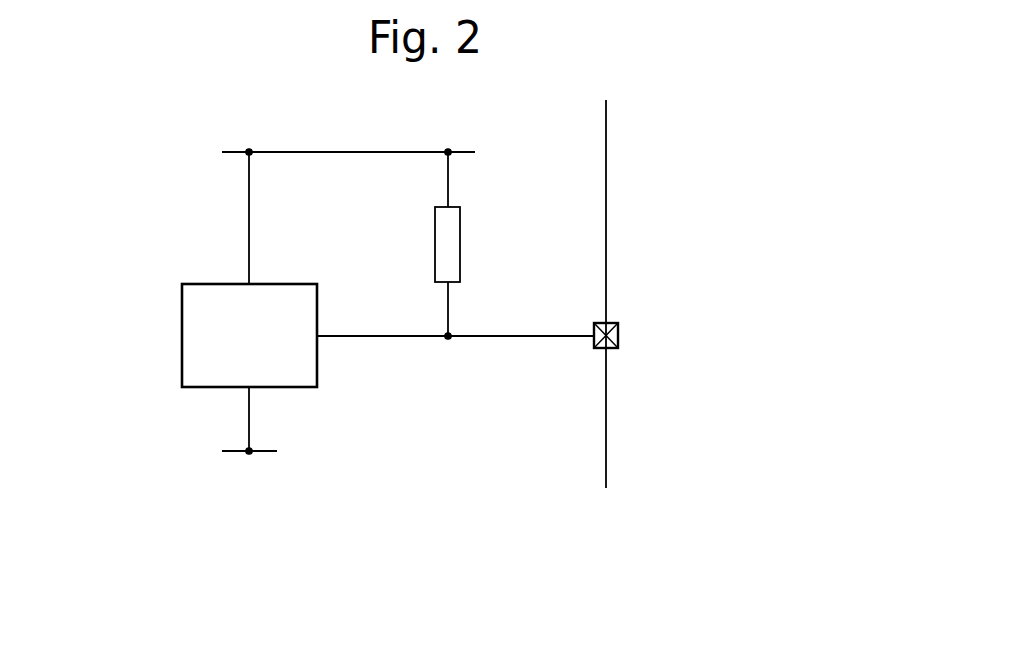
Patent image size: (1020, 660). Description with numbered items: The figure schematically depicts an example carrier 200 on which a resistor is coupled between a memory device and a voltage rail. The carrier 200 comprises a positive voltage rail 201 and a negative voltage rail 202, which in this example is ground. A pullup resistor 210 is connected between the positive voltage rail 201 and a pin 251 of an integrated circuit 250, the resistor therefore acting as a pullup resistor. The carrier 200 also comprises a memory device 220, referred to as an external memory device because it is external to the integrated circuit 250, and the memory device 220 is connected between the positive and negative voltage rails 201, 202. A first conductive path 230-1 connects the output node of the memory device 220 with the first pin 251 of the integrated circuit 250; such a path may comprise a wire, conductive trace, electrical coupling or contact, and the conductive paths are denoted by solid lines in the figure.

The carrier 200 is at (594, 564).
The positive voltage rail 201 is at (301, 152).
The negative voltage rail 202 is at (229, 482).
The pullup resistor 210 is at (435, 222).
The memory device 220 is at (182, 325).
The first conductive path 230-1 is at (500, 336).
The integrated circuit 250 is at (683, 187).
The pin 251 is at (618, 336).